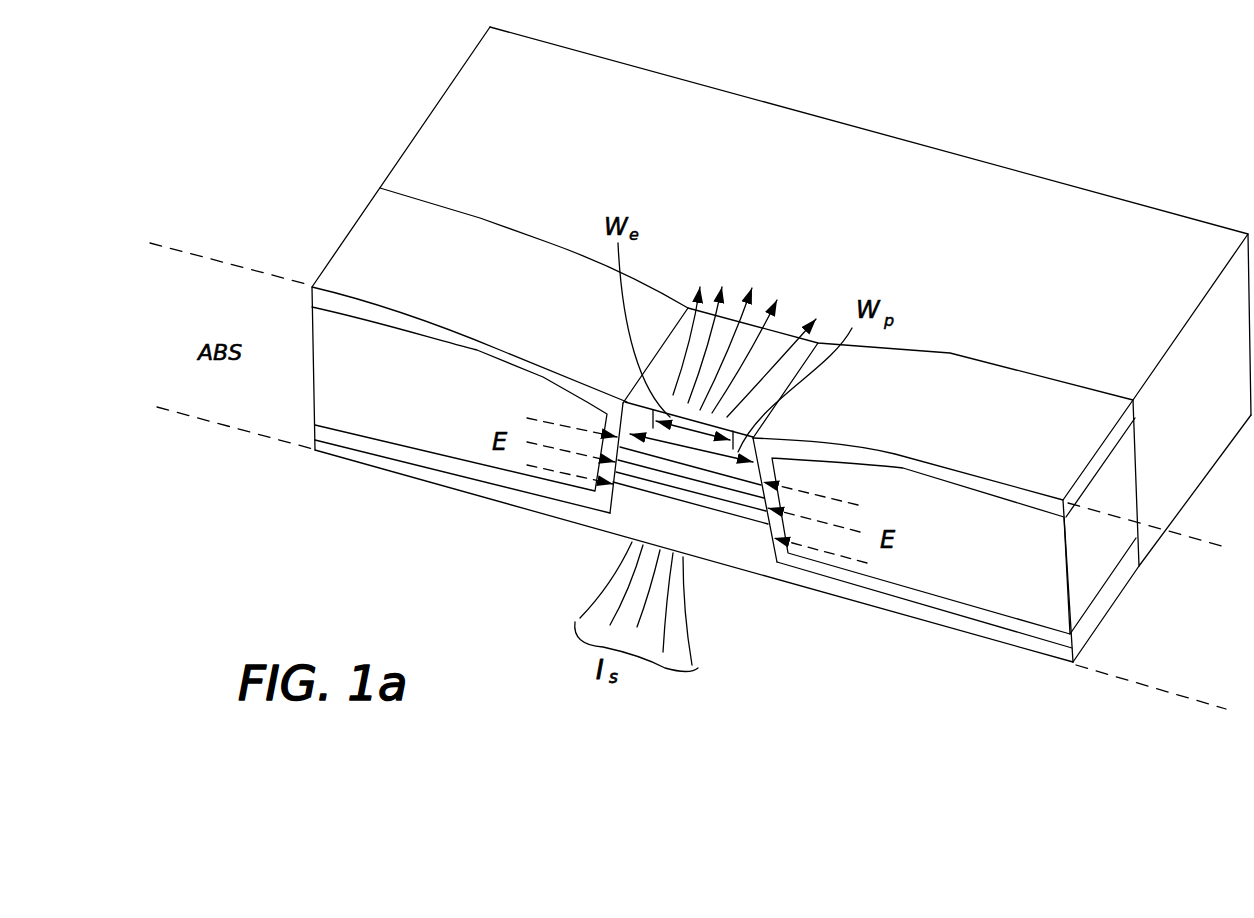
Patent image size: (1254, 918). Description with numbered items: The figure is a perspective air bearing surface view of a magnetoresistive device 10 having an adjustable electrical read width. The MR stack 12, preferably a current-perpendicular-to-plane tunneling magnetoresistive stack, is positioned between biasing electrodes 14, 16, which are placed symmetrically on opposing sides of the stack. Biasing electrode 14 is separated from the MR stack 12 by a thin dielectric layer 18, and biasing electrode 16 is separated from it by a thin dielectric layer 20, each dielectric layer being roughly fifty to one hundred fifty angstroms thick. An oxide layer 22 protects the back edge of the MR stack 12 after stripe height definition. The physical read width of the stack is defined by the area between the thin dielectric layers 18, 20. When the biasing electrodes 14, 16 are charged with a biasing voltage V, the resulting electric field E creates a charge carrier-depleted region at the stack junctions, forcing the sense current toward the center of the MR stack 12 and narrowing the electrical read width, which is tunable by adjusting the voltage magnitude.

The magnetoresistive device 10 is at (948, 105).
The MR stack 12 is at (717, 516).
The biasing electrode 14 is at (388, 418).
The biasing electrode 16 is at (1002, 604).
The thin dielectric layer 18 is at (617, 486).
The thin dielectric layer 20 is at (770, 543).
The oxide layer 22 is at (953, 278).